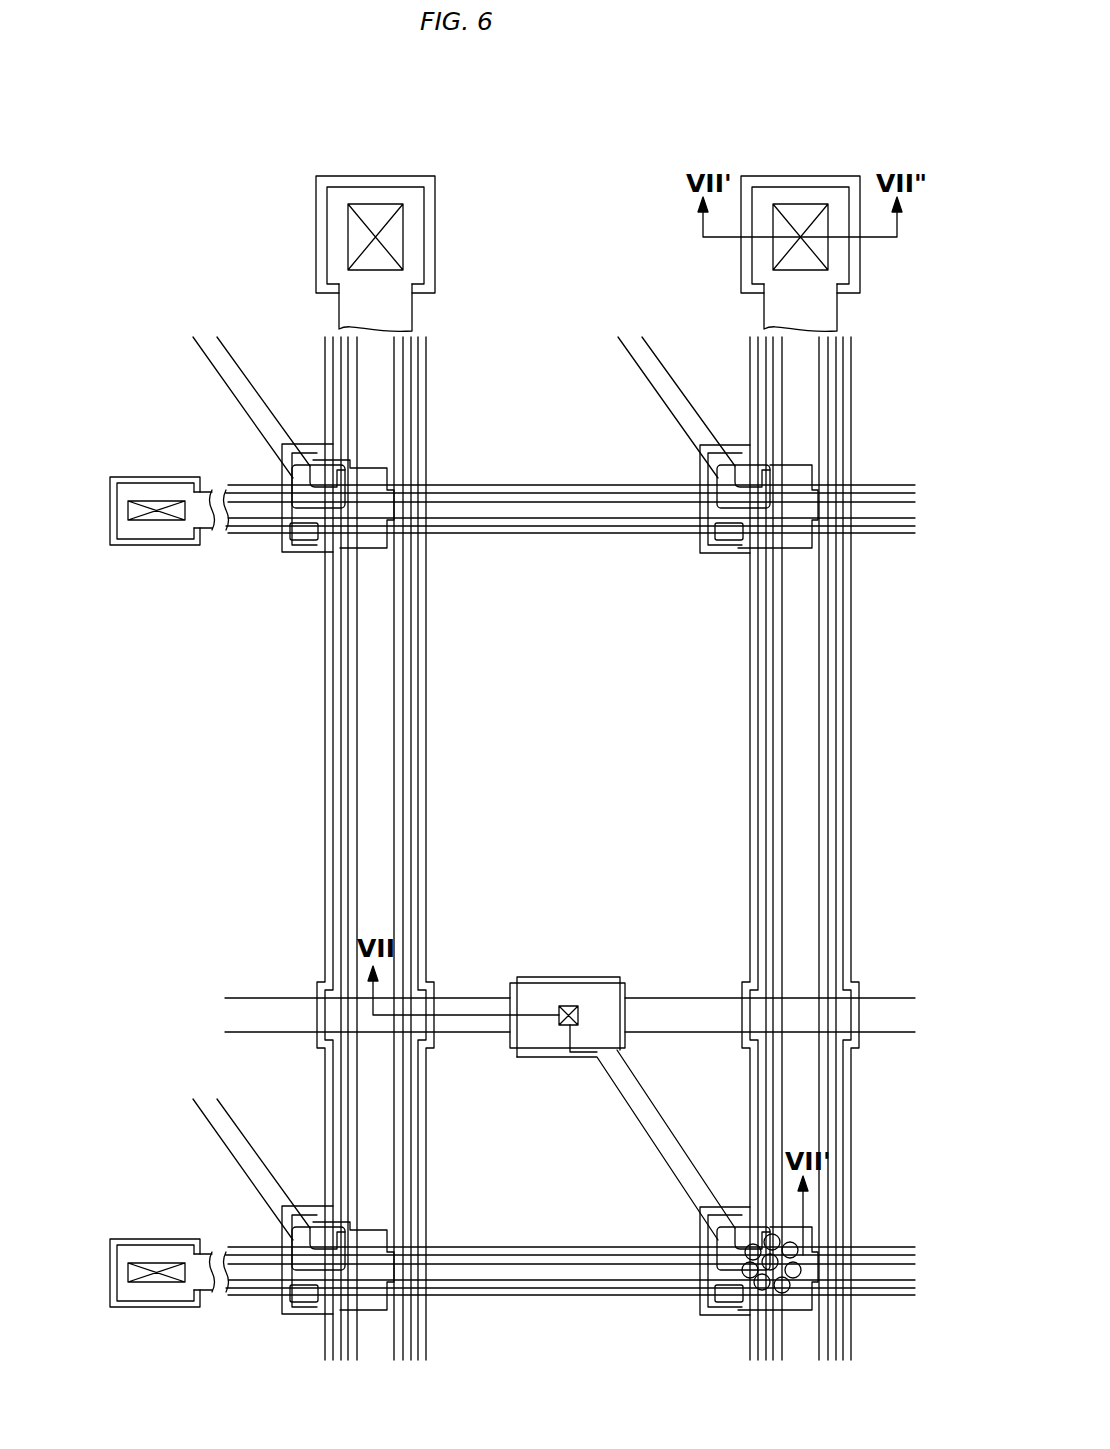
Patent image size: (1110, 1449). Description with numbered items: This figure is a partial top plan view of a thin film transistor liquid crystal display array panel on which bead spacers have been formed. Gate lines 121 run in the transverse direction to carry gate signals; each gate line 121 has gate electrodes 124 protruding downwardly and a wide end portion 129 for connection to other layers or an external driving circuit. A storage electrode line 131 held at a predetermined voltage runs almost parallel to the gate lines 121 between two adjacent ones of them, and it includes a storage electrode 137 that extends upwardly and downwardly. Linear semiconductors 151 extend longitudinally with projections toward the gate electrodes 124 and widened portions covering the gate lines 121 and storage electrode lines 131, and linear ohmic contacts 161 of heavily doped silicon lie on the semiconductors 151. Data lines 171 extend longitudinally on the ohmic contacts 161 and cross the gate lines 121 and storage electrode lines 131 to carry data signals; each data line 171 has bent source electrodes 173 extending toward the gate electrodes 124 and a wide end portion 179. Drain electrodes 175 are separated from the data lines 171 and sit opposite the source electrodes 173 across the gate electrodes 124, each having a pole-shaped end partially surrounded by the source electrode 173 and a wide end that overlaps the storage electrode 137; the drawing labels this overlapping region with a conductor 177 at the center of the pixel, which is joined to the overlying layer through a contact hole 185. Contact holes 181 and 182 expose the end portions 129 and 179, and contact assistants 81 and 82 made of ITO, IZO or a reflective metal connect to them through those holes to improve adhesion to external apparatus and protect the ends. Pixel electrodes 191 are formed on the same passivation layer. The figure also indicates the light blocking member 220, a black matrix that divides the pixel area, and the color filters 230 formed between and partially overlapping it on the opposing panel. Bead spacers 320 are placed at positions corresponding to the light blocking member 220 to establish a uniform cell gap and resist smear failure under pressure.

The contact assistant 82 is at (435, 240).
The contact assistant 81 is at (168, 500).
The gate line 121 is at (517, 485).
The gate electrode 124 is at (718, 553).
The end portion of gate line 129 is at (145, 480).
The storage electrode line 131 is at (887, 998).
The storage electrode 137 is at (615, 983).
The linear semiconductor 151 is at (726, 468).
The linear ohmic contact 161 is at (358, 613).
The data line 171 is at (357, 669).
The source electrode 173 is at (740, 552).
The drain electrode 175 is at (668, 1165).
The storage capacitor conductor 177 is at (537, 977).
The end portion of data line 179 is at (316, 240).
The contact hole 181 is at (148, 546).
The contact hole 182 is at (378, 205).
The contact hole 185 is at (570, 1004).
The pixel electrode 191 is at (400, 725).
The light blocking member 220 is at (428, 410).
The color filter 230 is at (428, 812).
The bead spacer 320 is at (800, 1276).